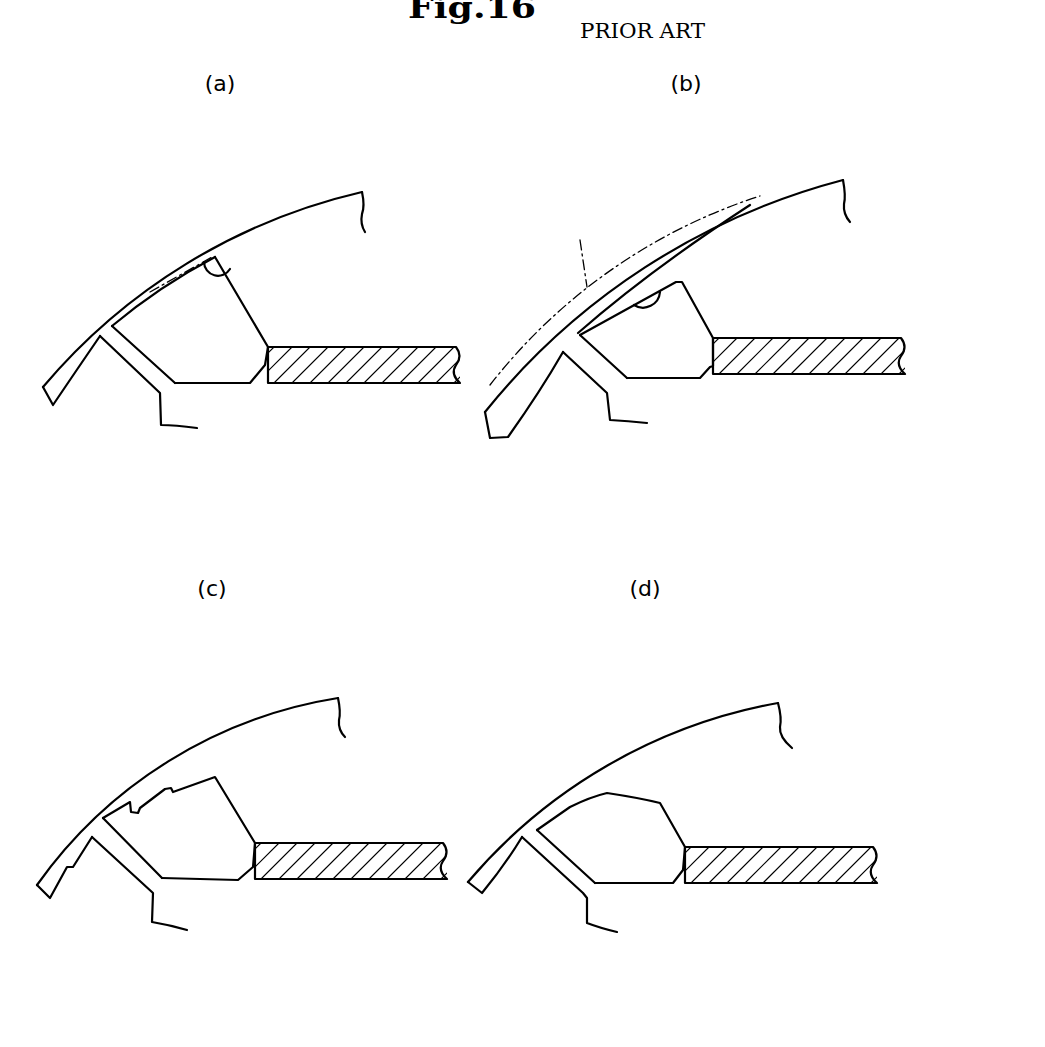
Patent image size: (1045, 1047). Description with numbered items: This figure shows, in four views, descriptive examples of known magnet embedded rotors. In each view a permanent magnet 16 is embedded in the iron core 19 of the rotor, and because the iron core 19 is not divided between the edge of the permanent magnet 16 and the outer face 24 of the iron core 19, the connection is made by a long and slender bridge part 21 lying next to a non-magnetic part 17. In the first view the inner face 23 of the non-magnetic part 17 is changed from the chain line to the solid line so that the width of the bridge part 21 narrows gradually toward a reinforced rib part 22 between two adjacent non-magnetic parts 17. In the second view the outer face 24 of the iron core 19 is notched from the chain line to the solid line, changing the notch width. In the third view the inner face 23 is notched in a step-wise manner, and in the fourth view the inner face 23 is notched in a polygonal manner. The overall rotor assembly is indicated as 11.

The vehicle exterior panel 11 is at (443, 502).
The permanent magnet 16 is at (407, 348).
The non-magnetic part 17 is at (140, 322).
The iron core 19 is at (283, 225).
The bridge part 21 is at (202, 253).
The reinforced rib part 22 is at (108, 330).
The inner face 23 is at (213, 257).
The outer face 24 is at (173, 263).